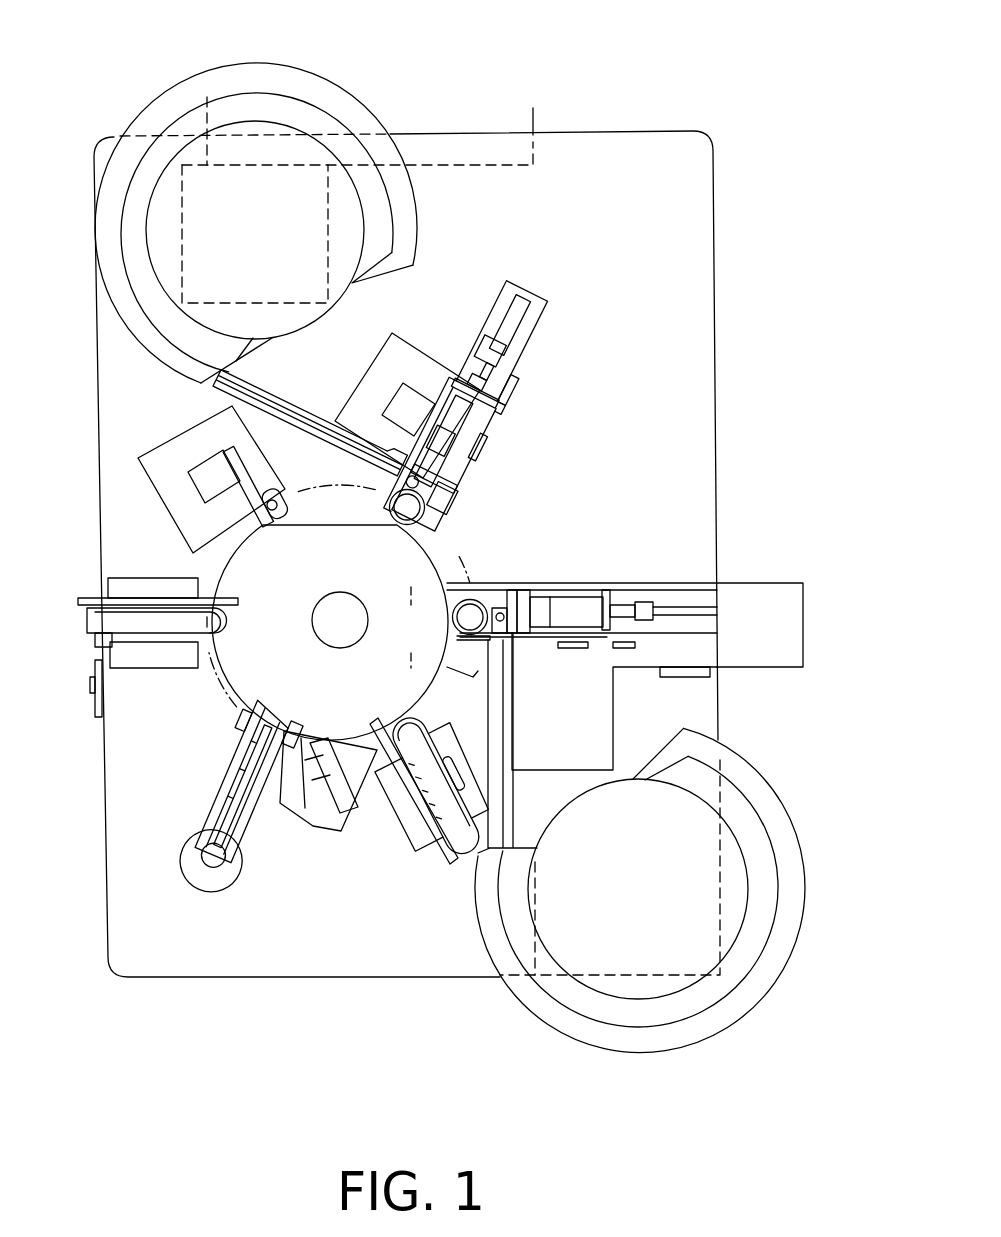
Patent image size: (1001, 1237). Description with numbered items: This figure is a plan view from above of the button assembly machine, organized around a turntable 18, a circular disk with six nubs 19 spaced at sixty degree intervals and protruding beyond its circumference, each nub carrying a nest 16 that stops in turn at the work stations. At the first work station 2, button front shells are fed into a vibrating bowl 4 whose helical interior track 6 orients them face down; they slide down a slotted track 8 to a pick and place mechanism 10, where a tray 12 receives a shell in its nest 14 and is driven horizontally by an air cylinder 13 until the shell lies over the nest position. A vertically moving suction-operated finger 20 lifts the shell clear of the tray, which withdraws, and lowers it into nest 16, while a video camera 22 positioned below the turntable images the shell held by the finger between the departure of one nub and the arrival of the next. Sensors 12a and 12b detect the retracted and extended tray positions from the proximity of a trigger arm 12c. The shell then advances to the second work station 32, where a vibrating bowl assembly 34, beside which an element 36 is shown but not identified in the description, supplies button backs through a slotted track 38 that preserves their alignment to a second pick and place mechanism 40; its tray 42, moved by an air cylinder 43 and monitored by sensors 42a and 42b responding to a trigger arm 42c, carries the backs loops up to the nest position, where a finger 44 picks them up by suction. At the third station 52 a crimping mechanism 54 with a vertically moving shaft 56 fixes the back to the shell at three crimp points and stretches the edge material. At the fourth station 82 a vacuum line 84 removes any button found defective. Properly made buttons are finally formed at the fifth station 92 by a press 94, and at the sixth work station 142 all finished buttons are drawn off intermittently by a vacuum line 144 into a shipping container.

The first work station 2 is at (590, 560).
The vibrating bowl 4 is at (648, 906).
The helical interior track 6 is at (527, 943).
The slotted track 8 is at (502, 813).
The pick and place mechanism 10 is at (587, 605).
The tray 12 is at (513, 607).
The sensor 12a is at (633, 645).
The sensor 12b is at (573, 648).
The trigger arm 12c is at (603, 647).
The air cylinder 13 is at (690, 606).
The nest 14 is at (500, 604).
The nests 16 is at (453, 627).
The turntable 18 is at (308, 682).
The nubs 19 is at (385, 514).
The suction-operated finger 20 is at (455, 612).
The video camera 22 is at (427, 668).
The second work station 32 is at (493, 394).
The vibrating bowl assembly 34 is at (274, 241).
The reel guard 36 is at (322, 115).
The slotted track 38 is at (262, 392).
The pick and place mechanism 40 is at (458, 405).
The tray 42 is at (443, 454).
The sensor 42a is at (507, 390).
The sensor 42b is at (477, 447).
The trigger arm 42c is at (500, 408).
The air cylinder 43 is at (501, 341).
The finger 44 is at (424, 516).
The third station 52 is at (150, 497).
The crimping mechanism 54 is at (255, 519).
The shaft 56 is at (278, 497).
The fourth station 82 is at (165, 657).
The vacuum line 84 is at (118, 618).
The fifth station 92 is at (205, 782).
The press 94 is at (280, 805).
The sixth work station 142 is at (387, 815).
The vacuum line 144 is at (463, 837).